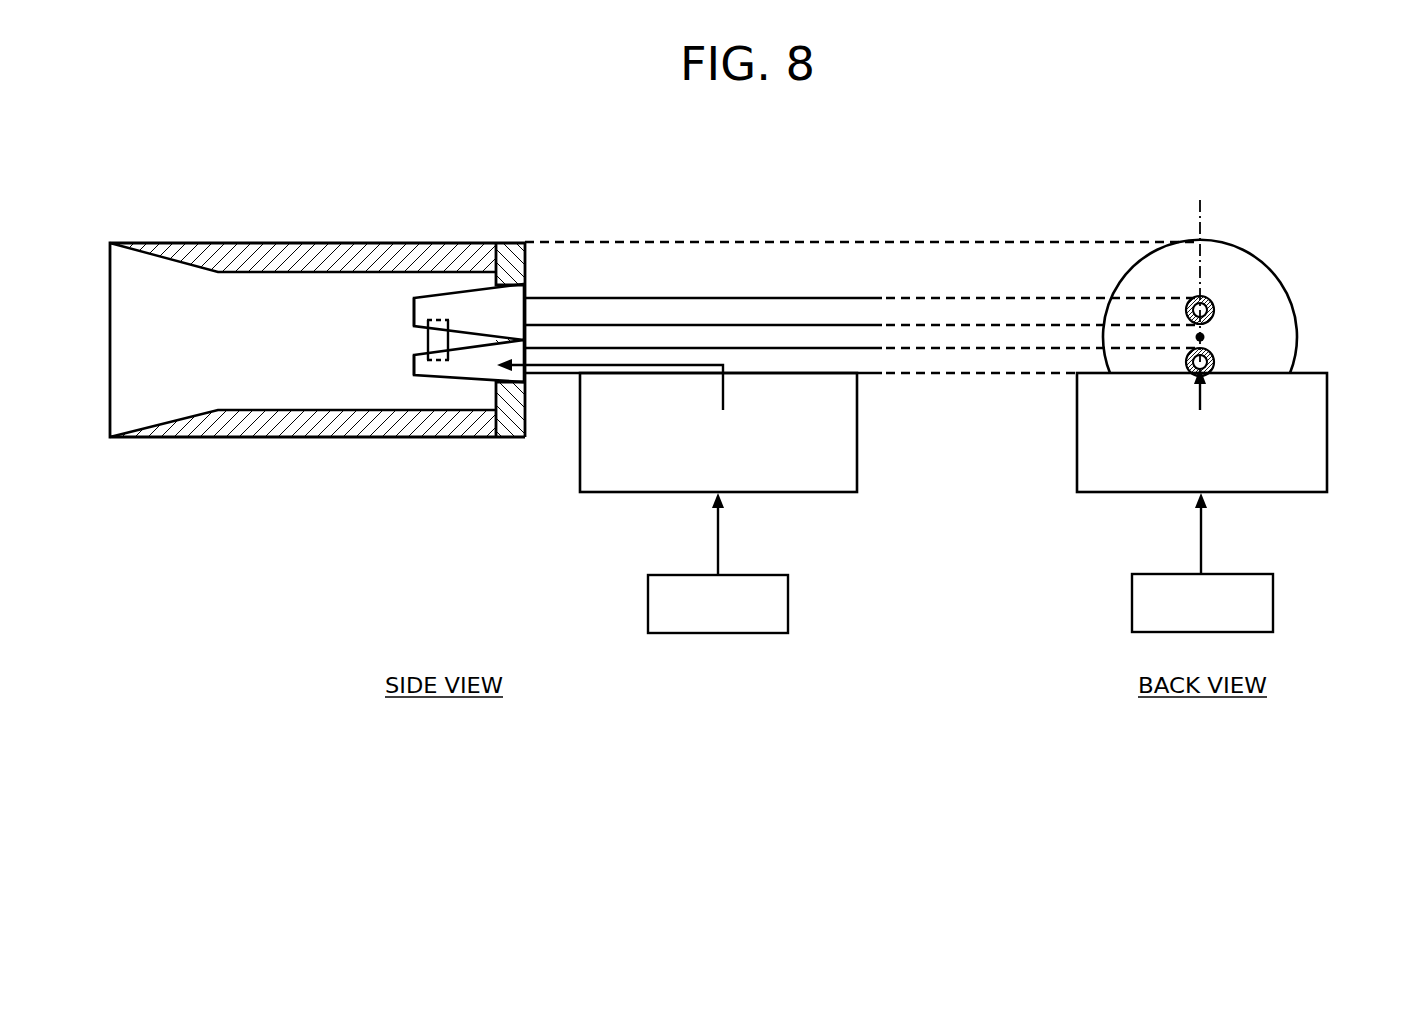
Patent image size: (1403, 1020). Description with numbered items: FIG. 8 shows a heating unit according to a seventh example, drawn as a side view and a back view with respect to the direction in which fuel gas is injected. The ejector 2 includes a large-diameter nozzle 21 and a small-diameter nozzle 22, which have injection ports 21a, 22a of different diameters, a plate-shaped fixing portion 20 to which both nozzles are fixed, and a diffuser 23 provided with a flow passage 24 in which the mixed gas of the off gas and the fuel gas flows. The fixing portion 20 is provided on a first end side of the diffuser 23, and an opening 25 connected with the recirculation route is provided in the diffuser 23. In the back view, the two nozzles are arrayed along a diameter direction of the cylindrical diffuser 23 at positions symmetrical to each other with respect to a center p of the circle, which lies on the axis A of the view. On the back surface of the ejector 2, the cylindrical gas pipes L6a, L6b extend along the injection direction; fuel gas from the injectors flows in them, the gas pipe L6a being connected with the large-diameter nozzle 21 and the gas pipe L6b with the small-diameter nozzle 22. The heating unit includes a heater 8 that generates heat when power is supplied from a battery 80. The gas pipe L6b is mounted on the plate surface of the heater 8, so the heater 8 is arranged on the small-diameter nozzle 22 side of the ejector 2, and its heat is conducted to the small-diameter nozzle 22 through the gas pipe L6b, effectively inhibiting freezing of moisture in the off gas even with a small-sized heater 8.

The ejector 2 is at (578, 231).
The heater 8 is at (857, 425).
The fixing portion 20 is at (511, 243).
The large-diameter nozzle 21 is at (525, 292).
The injection port 21a is at (417, 297).
The small-diameter nozzle 22 is at (527, 337).
The injection port 22a is at (413, 373).
The diffuser 23 is at (340, 243).
The flow passage 24 is at (270, 349).
The opening 25 is at (445, 317).
The battery 80 is at (788, 582).
The gas pipe L6a is at (713, 298).
The gas pipe L6b is at (713, 348).
The center of a circle p is at (1205, 334).
The axis A is at (1199, 265).